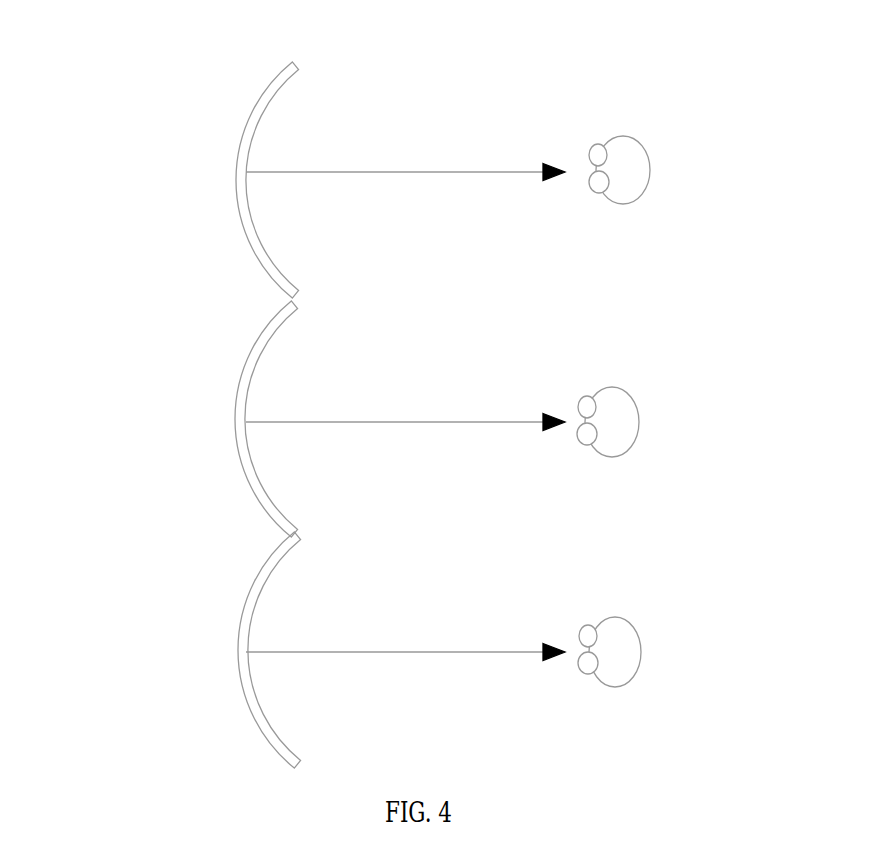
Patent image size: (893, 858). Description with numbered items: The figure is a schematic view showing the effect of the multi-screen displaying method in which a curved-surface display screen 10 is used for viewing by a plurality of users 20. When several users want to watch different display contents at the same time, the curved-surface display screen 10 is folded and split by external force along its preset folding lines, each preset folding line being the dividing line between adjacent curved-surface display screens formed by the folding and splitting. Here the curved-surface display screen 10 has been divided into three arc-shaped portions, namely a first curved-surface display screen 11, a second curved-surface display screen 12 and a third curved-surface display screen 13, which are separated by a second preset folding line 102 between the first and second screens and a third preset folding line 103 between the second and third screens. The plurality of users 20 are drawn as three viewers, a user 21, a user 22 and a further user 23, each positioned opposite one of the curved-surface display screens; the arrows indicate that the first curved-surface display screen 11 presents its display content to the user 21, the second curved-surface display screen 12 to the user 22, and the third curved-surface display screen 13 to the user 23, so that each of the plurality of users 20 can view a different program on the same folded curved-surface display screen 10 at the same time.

The curved-surface display screen 10 is at (125, 122).
The first curved-surface display screen 11 is at (238, 176).
The second curved-surface display screen 12 is at (238, 420).
The third curved-surface display screen 13 is at (238, 650).
The second preset folding line 102 is at (300, 301).
The third preset folding line 103 is at (293, 535).
The plurality of users 20 is at (703, 308).
The user 21 is at (637, 200).
The user 22 is at (617, 455).
The third viewer eye 23 is at (618, 685).